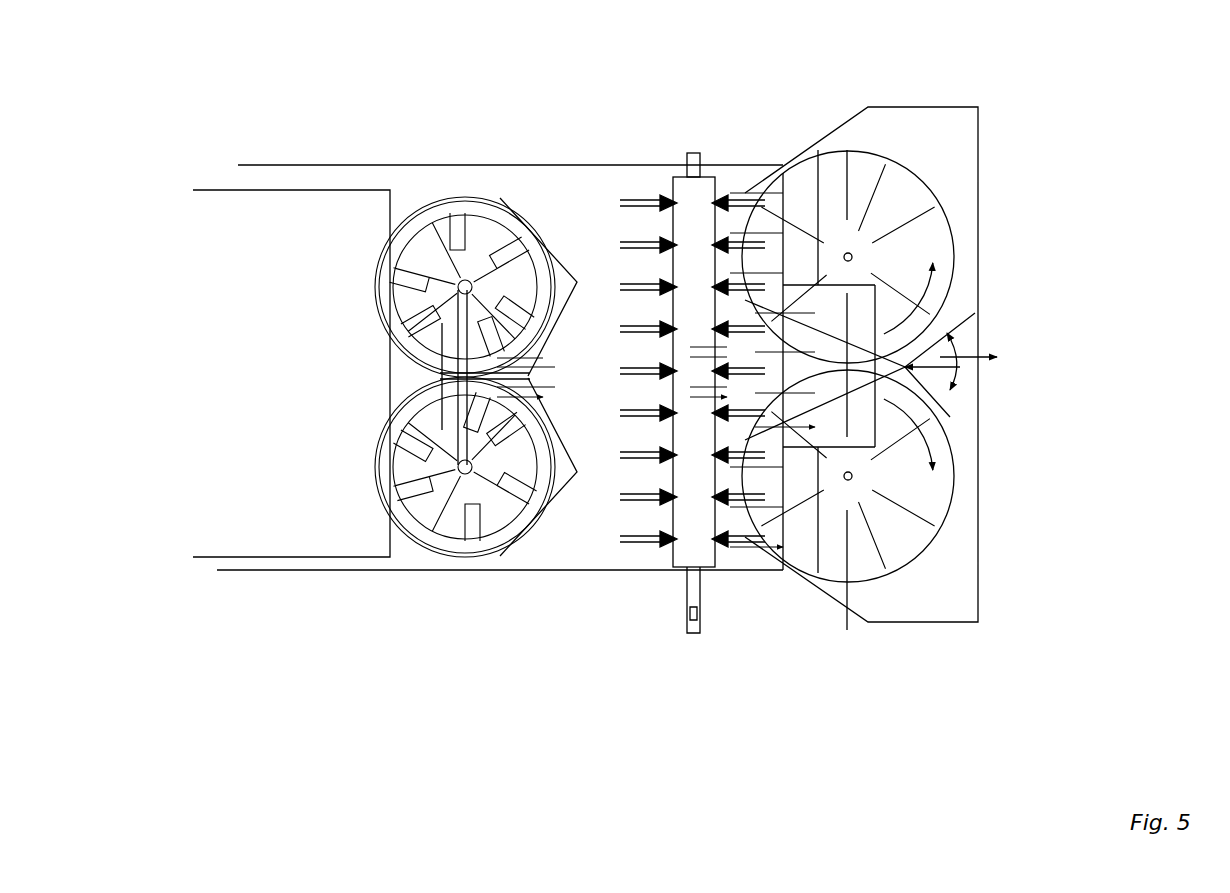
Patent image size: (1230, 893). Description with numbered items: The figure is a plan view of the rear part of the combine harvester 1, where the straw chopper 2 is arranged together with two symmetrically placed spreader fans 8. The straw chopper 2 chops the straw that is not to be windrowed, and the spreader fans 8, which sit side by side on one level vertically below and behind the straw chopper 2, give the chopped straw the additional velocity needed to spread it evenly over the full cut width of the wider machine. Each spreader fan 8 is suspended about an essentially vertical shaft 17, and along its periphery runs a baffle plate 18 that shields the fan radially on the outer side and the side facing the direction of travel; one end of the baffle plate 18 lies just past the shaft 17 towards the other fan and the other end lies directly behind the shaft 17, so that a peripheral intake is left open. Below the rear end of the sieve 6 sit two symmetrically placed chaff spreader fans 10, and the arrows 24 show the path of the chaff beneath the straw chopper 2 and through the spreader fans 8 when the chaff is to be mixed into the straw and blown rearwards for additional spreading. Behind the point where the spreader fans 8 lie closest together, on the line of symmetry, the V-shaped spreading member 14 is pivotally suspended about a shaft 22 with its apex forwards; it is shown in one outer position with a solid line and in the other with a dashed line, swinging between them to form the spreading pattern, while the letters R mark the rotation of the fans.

The combine harvester 1 is at (258, 163).
The straw chopper 2 is at (670, 583).
The sieve 6 is at (283, 502).
The spreader fans 8 is at (960, 200).
The chaff spreader fans 10 is at (447, 200).
The spreading member 14 is at (960, 343).
The shaft 17 is at (880, 555).
The baffle plate 18 is at (847, 630).
The shaft 22 is at (978, 380).
The arrows 24 is at (686, 355).
The rotation direction R is at (942, 267).